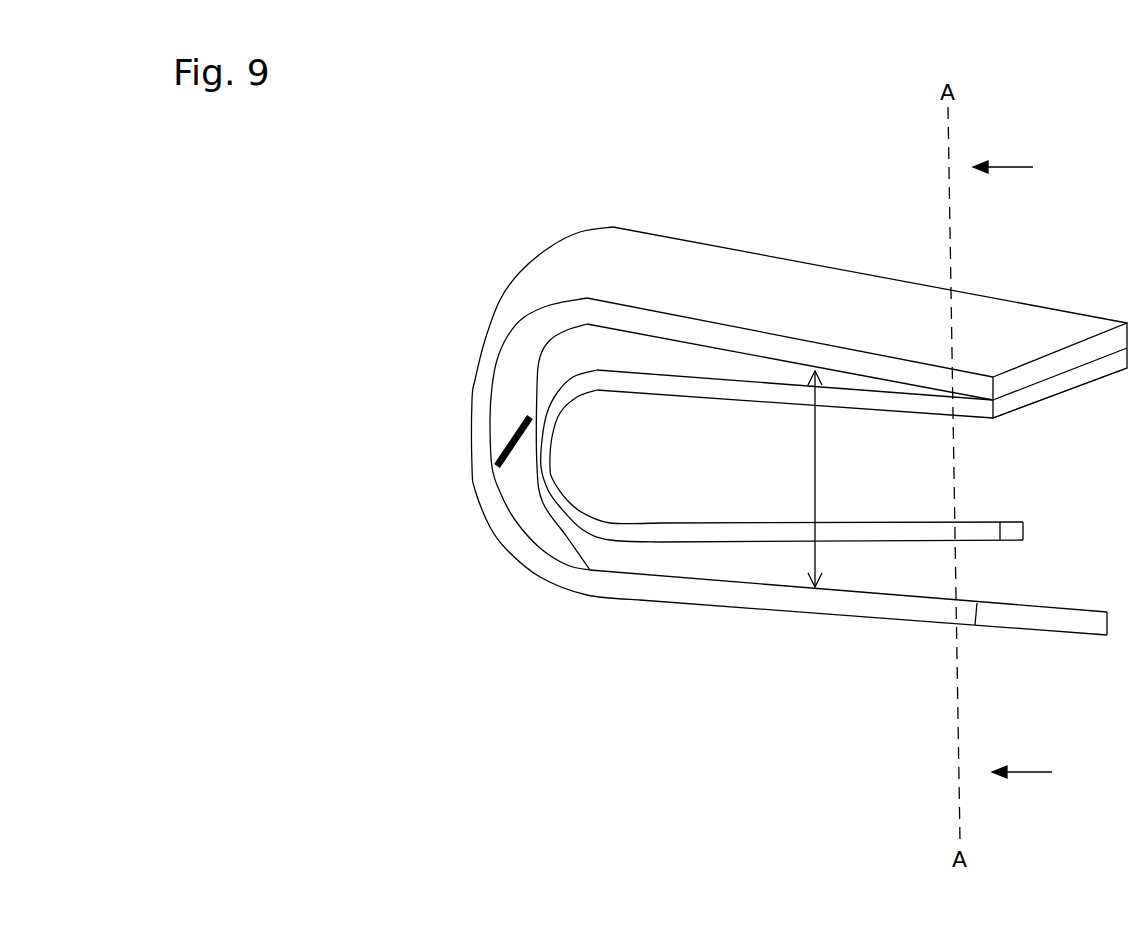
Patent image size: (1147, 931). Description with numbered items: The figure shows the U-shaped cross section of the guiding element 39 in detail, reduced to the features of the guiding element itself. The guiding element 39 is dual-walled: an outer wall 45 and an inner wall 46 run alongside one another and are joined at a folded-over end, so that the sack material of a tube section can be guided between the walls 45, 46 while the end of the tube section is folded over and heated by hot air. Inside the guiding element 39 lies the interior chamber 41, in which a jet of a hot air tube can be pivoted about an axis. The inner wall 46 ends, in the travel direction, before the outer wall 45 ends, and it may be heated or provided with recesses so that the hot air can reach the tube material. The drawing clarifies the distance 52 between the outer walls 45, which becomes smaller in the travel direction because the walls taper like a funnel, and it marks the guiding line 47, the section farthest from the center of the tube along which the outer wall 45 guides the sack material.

The guiding element 39 is at (503, 225).
The interior chamber 41 is at (685, 477).
The outer wall 45 is at (695, 333).
The inner wall 46 is at (965, 417).
The guiding line 47 is at (495, 470).
The distance between the exterior walls 52 is at (832, 479).